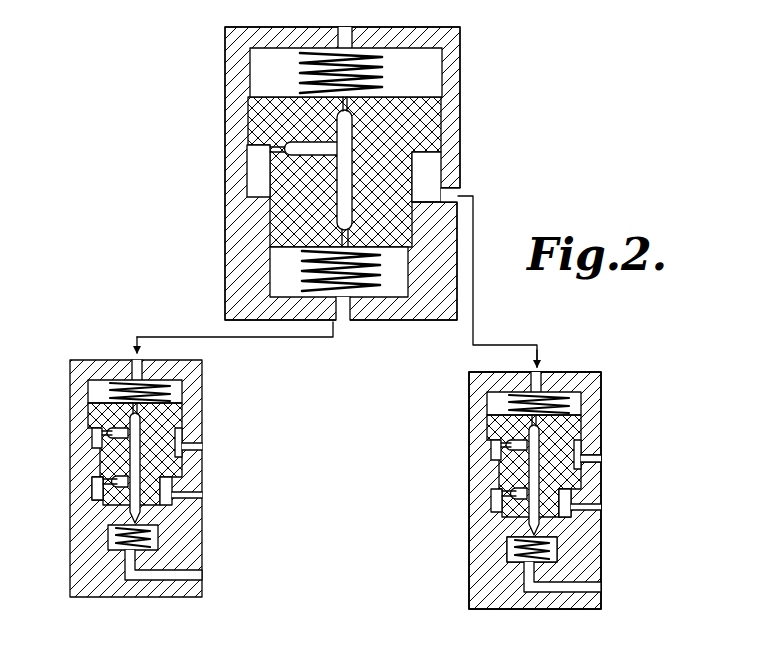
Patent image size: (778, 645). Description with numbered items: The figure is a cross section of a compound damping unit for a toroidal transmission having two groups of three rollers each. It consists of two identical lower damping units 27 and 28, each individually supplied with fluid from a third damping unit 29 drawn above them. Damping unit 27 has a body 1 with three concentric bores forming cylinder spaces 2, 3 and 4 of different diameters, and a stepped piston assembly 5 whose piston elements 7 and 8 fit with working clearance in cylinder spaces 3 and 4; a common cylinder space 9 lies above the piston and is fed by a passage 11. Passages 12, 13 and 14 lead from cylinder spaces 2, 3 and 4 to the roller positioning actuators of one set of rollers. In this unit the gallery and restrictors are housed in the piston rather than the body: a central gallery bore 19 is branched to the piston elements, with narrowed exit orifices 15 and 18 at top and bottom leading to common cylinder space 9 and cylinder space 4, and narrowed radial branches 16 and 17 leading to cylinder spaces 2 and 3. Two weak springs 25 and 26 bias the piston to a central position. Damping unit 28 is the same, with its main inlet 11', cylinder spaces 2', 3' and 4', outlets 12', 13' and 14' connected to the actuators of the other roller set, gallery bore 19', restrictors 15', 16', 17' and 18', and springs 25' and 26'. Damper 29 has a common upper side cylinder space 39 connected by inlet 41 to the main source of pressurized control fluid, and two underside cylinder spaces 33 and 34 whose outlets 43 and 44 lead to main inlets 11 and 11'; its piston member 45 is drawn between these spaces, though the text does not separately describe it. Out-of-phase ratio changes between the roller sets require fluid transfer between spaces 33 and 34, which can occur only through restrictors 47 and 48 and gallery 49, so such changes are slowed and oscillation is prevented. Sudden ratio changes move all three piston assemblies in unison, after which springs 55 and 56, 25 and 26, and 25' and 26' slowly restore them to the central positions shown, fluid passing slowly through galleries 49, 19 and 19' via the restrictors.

The inlet 41 is at (345, 0).
The spring 55 is at (384, 66).
The common upper side cylinder space 39 is at (457, 80).
The third damping unit 29 is at (466, 135).
The valve spool 45 is at (346, 100).
The restrictor 47 is at (284, 148).
The gallery 49 is at (345, 178).
The restrictor 48 is at (345, 232).
The underside cylinder space 33 is at (437, 168).
The outlet 43 is at (460, 190).
The underside cylinder space 34 is at (409, 272).
The spring 56 is at (378, 287).
The outlet 44 is at (345, 316).
The damping unit 28 is at (207, 432).
The main inlet 11' is at (210, 351).
The spring 25' is at (165, 387).
The damping orifice 15' is at (81, 419).
The damping orifice 16' is at (67, 441).
The damping orifice 17' is at (67, 494).
The gallery bore 19' is at (80, 476).
The cylinder space 2' is at (205, 442).
The outlet 12' is at (211, 478).
The outlet 13' is at (205, 493).
The cylinder space 3' is at (71, 514).
The damping orifice 18' is at (166, 468).
The spring 26' is at (180, 545).
The cylinder space 4' is at (95, 557).
The outlet 14' is at (184, 573).
The body 1 is at (519, 490).
The piston assembly 5 is at (556, 490).
The damping unit 27 is at (554, 490).
The passage 11 is at (562, 365).
The spring 25 is at (560, 397).
The common cylinder space 9 is at (556, 457).
The damping orifice 18 is at (488, 488).
The damping orifice 16 is at (469, 457).
The damping orifice 15 is at (482, 438).
The damping orifice 17 is at (470, 511).
The gallery bore 19 is at (482, 495).
The cylinder space 2 is at (597, 455).
The passage 12 is at (616, 470).
The passage 13 is at (603, 513).
The piston element 7 is at (597, 500).
The cylinder space 3 is at (603, 510).
The cylinder space 4 is at (565, 557).
The piston element 8 is at (568, 549).
The spring 26 is at (526, 588).
The passage 14 is at (577, 586).